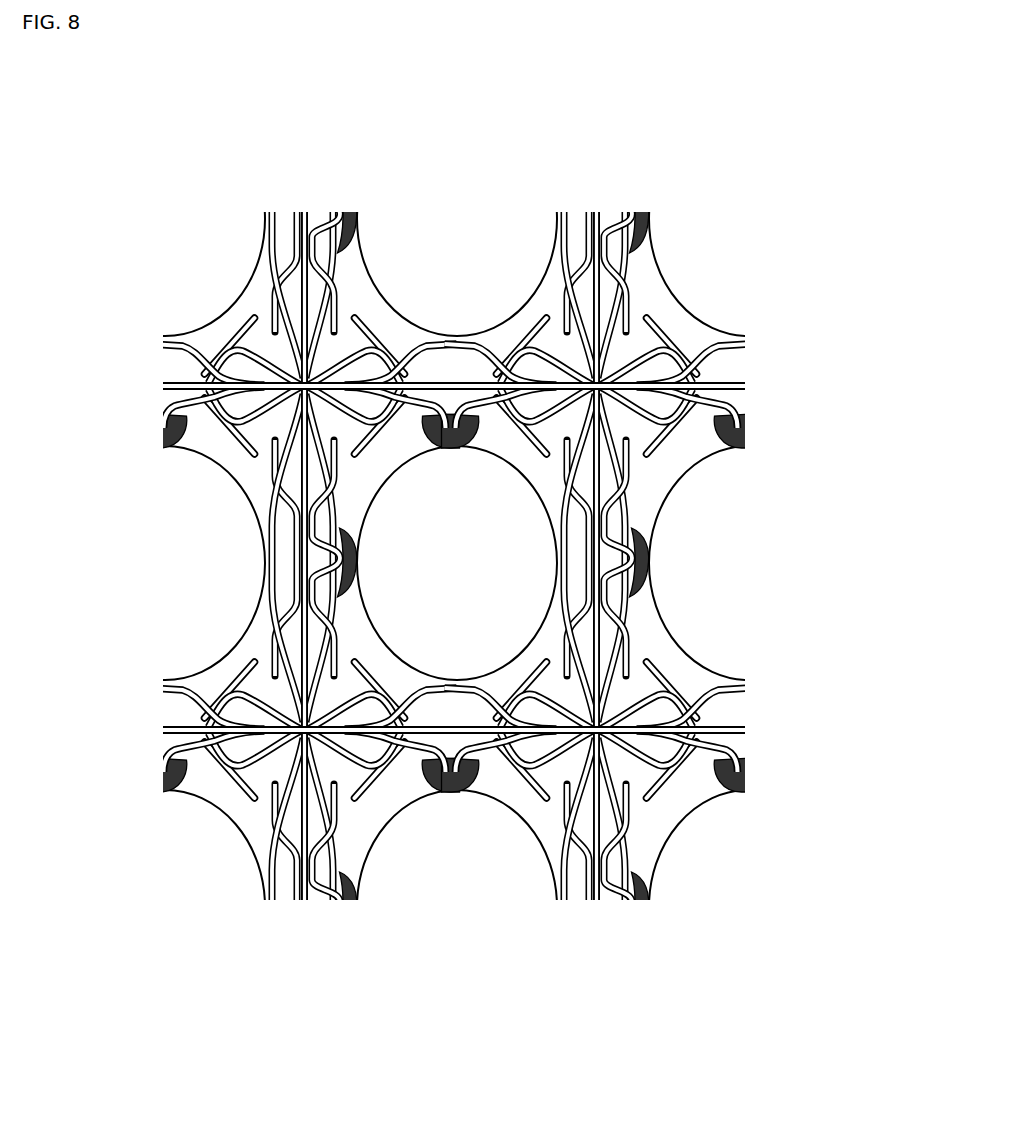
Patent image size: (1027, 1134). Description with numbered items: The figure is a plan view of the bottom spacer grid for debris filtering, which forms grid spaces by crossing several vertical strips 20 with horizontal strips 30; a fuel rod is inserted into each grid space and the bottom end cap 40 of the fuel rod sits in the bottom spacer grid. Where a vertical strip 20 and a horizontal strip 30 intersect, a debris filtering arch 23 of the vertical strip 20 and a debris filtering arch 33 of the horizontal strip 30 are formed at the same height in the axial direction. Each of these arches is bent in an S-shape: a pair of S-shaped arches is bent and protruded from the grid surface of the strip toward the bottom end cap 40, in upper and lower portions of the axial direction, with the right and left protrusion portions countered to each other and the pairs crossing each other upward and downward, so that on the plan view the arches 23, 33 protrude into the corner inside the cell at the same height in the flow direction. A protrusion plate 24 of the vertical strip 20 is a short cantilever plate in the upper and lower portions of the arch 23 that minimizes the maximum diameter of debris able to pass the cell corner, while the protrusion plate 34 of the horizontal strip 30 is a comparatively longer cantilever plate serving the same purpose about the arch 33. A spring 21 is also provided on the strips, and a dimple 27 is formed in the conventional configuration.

The vertical strip 20 is at (305, 214).
The spring 21 is at (483, 432).
The debris filtering arch 23 is at (565, 645).
The protrusion plate 24 is at (270, 650).
The dimple 27 is at (438, 342).
The horizontal strip 30 is at (745, 385).
The debris filtering arch 33 is at (217, 765).
The protrusion plate 34 is at (650, 797).
The bottom end cap 40 is at (457, 563).